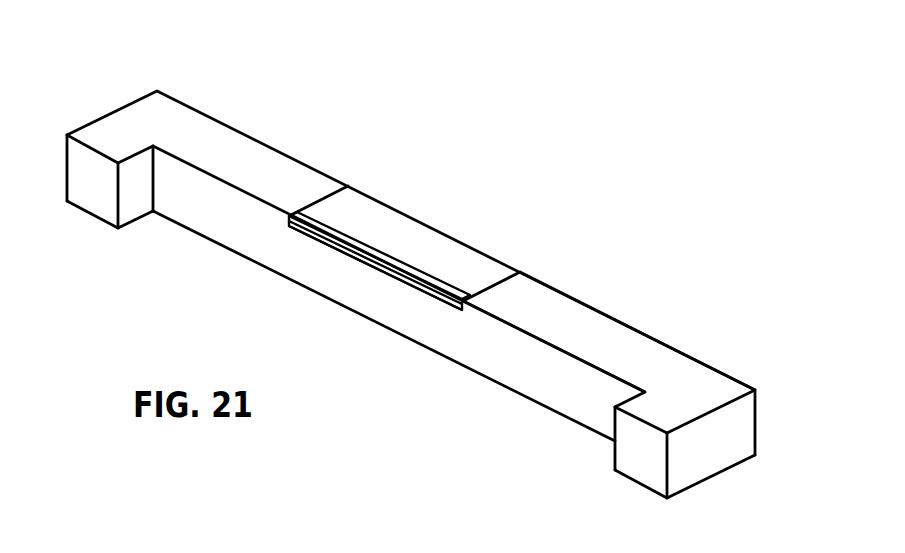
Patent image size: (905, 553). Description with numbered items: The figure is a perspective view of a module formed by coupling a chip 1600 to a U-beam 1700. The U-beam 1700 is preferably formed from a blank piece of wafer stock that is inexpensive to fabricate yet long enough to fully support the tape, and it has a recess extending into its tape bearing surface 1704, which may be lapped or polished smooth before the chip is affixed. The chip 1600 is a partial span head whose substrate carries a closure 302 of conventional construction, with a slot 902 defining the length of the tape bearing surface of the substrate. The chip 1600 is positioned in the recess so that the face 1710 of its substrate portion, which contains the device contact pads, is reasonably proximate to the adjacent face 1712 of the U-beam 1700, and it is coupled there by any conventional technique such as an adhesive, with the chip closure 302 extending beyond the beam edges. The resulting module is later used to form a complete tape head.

The U-beam 1700 is at (167, 108).
The face of the substrate portion of the chip 1710 is at (296, 251).
The chip 1600 is at (448, 268).
The slot 902 is at (337, 213).
The closure 302 is at (377, 272).
The tape bearing surface 1704 is at (568, 320).
The face of the U-beam 1712 is at (540, 370).